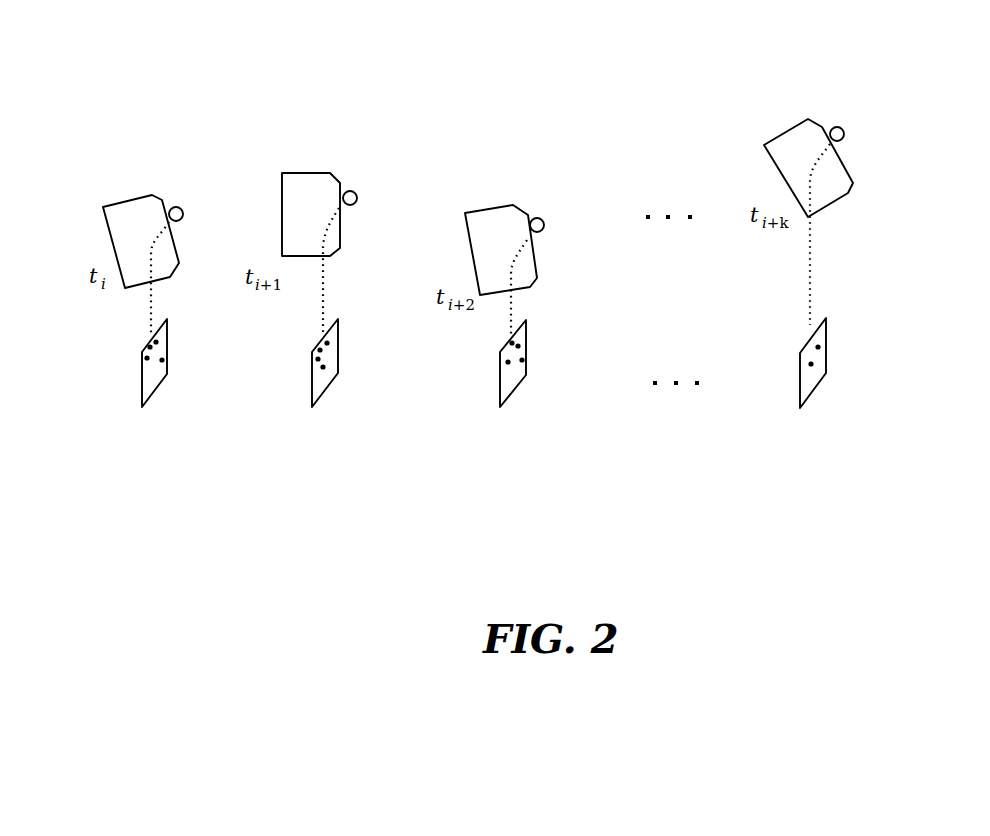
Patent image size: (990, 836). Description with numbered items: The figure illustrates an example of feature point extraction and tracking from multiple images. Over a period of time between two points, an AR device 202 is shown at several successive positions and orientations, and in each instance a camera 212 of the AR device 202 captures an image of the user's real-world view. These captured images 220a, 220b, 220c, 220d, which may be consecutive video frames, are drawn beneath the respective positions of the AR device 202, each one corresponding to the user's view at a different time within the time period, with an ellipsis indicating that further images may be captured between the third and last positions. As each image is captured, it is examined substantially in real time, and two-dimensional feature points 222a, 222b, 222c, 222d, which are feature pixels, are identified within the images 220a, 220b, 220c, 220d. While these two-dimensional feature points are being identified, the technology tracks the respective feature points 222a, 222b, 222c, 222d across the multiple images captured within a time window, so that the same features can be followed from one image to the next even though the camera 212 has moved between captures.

The AR device 202 is at (130, 205).
The camera 212 is at (178, 207).
The image 220a is at (150, 395).
The image 220b is at (317, 389).
The image 220c is at (505, 394).
The image 220d is at (807, 392).
The 2D feature points 222a is at (162, 360).
The 2D feature points 222b is at (329, 347).
The 2D feature points 222c is at (523, 349).
The 2D feature points 222d is at (815, 367).